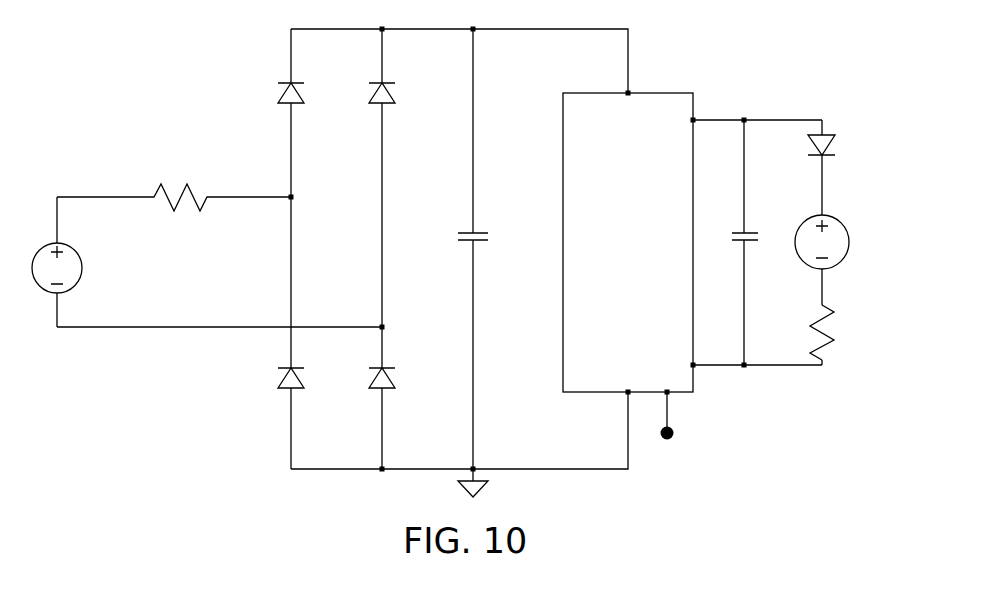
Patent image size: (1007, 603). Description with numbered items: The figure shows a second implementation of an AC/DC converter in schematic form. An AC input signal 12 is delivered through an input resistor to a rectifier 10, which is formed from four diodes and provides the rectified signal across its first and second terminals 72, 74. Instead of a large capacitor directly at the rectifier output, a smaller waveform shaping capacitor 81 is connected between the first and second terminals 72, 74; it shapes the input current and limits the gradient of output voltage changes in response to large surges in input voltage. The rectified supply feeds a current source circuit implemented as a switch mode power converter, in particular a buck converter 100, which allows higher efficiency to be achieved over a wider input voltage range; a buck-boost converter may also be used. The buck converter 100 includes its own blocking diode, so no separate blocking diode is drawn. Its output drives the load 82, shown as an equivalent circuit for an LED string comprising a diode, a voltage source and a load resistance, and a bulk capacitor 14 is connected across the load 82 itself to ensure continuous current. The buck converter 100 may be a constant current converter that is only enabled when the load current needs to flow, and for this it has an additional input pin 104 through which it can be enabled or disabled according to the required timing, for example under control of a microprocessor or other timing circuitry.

The rectifier 10 is at (266, 410).
The AC input signal 12 is at (82, 271).
The bulk capacitor 14 is at (738, 233).
The first terminal 72 is at (474, 31).
The second terminal 74 is at (477, 468).
The waveform shaping capacitor 81 is at (481, 232).
The load 82 is at (825, 106).
The buck converter 100 is at (674, 92).
The input pin 104 is at (673, 433).